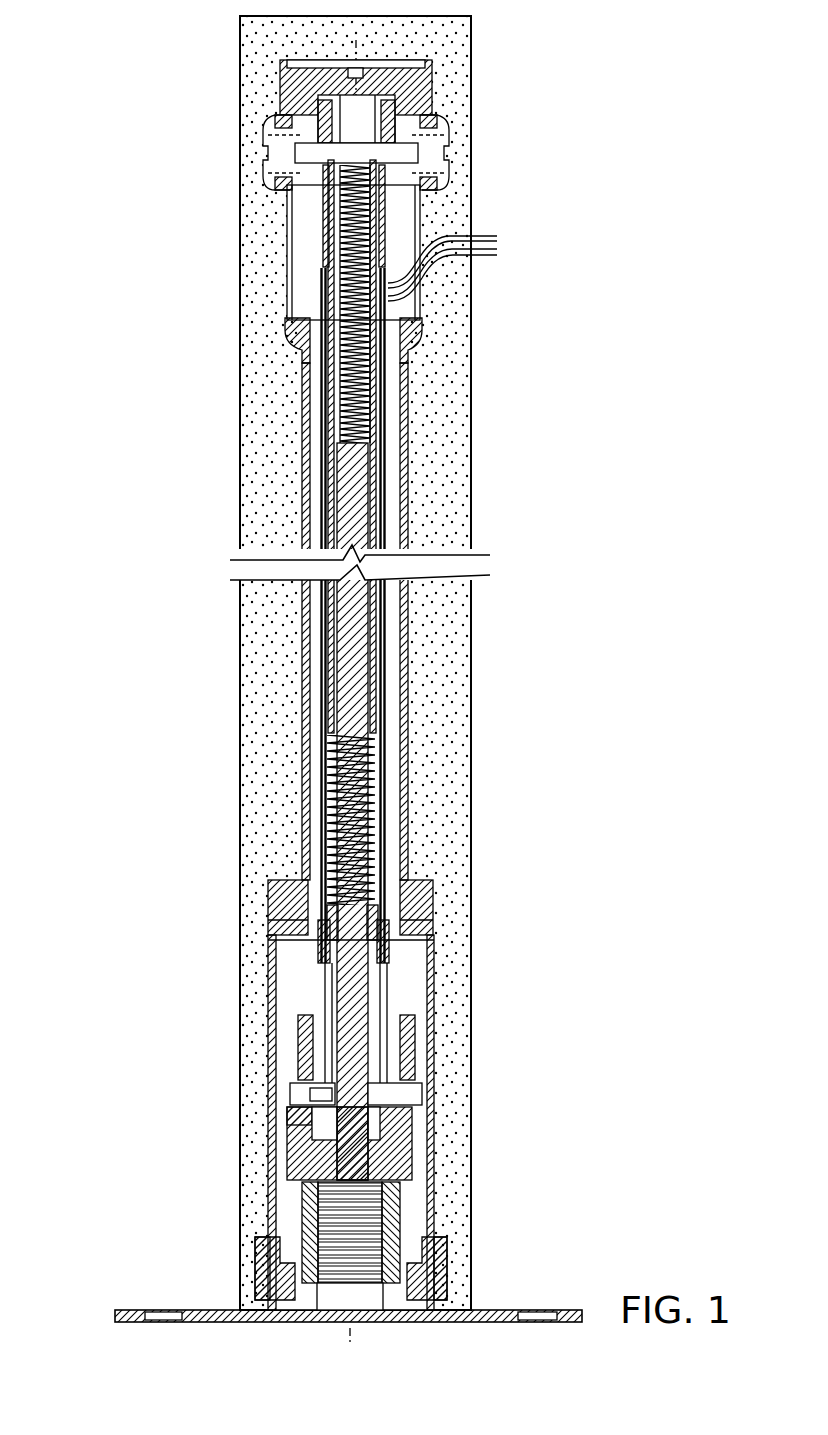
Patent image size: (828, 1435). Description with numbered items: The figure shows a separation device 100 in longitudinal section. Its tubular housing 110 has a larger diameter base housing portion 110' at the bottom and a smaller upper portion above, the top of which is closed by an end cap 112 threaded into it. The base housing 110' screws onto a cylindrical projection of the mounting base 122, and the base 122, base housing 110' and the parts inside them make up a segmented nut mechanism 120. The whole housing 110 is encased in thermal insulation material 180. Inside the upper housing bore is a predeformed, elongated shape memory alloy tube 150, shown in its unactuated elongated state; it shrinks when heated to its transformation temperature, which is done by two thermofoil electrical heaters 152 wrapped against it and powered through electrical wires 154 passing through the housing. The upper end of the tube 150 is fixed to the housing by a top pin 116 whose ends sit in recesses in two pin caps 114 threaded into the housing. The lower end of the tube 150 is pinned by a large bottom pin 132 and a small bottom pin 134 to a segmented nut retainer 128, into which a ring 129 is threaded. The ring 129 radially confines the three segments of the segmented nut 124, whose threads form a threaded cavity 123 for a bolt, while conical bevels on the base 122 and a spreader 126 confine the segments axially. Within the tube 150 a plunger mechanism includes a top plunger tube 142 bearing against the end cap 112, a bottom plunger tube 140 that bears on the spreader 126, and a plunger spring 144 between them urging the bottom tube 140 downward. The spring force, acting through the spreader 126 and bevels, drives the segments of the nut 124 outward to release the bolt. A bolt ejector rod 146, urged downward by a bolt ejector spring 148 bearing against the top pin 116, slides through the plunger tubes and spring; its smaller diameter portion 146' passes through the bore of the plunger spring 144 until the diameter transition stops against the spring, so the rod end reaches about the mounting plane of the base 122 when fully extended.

The separation device 100 is at (198, 97).
The tubular housing 110 is at (286, 622).
The base housing portion 110' is at (298, 910).
The end cap 112 is at (405, 85).
The pin caps 114 is at (267, 140).
The top pin 116 is at (295, 162).
The segmented nut mechanism 120 is at (110, 950).
The mounting base 122 is at (492, 1310).
The threaded cavity 123 is at (339, 1326).
The segmented nut 124 is at (312, 1190).
The spreader 126 is at (412, 1157).
The segmented nut retainer 128 is at (303, 1028).
The ring 129 is at (282, 1275).
The large bottom pin 132 is at (420, 1098).
The small bottom pin 134 is at (290, 1082).
The bottom plunger tube 140 is at (383, 928).
The top plunger tube 142 is at (330, 730).
The plunger spring 144 is at (383, 767).
The bolt ejector rod 146 is at (450, 497).
The smaller diameter portion of the ejector rod 146' is at (445, 877).
The bolt ejector spring 148 is at (372, 372).
The shape memory alloy tube 150 is at (388, 215).
The electrical heaters 152 is at (328, 440).
The electrical wires 154 is at (498, 228).
The thermal insulation material 180 is at (462, 686).